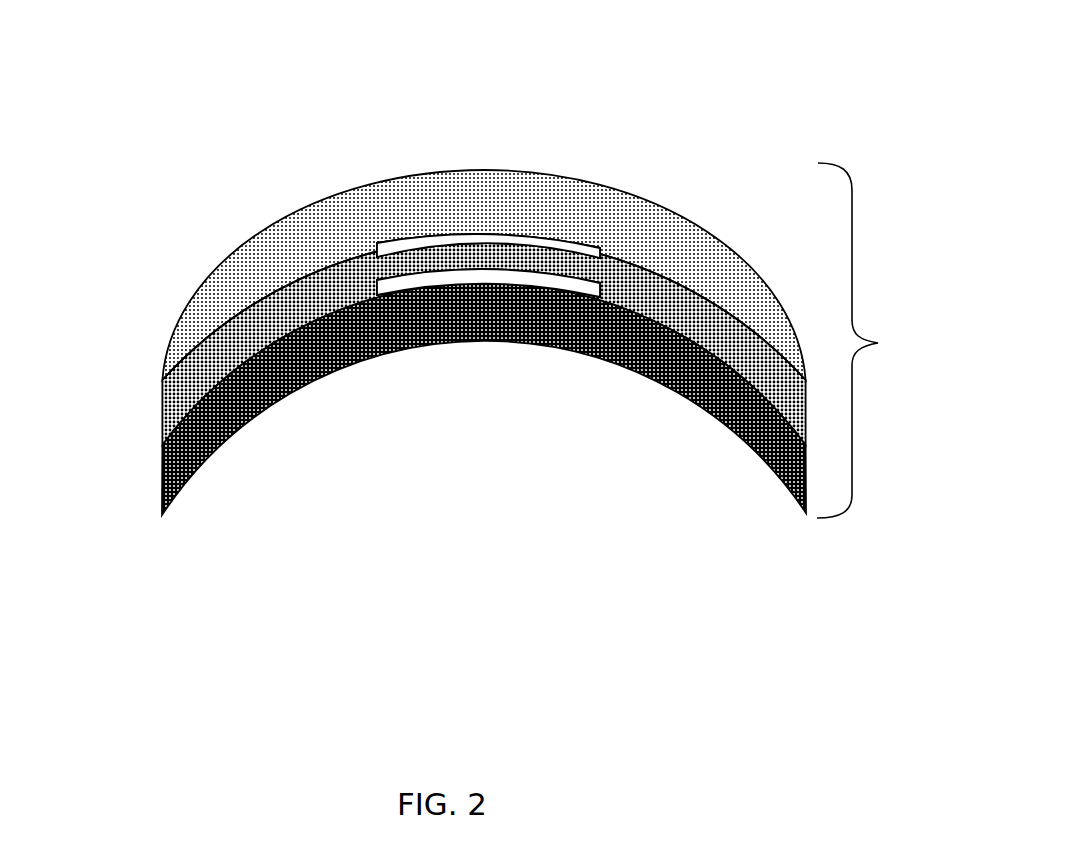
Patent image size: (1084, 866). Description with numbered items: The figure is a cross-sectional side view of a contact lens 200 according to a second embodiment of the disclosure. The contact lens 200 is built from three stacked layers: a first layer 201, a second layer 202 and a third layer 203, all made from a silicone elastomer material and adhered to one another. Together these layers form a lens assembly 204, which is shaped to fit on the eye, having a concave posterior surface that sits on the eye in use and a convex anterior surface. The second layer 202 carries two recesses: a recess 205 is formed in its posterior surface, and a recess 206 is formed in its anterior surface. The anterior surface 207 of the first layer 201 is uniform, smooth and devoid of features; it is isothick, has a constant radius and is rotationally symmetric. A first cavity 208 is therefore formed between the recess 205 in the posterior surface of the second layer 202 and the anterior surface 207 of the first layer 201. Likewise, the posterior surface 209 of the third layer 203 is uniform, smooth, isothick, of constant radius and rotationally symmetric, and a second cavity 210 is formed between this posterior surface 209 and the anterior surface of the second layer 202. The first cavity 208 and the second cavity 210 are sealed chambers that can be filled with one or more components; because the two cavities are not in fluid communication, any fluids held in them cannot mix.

The contact lens 200 is at (752, 124).
The first layer 201 is at (205, 425).
The second layer 202 is at (200, 377).
The third layer 203 is at (250, 288).
The lens assembly 204 is at (883, 340).
The recess 205 is at (602, 292).
The recess 206 is at (573, 250).
The anterior surface 207 is at (478, 287).
The first cavity 208 is at (401, 287).
The posterior surface 209 is at (378, 243).
The second cavity 210 is at (493, 232).